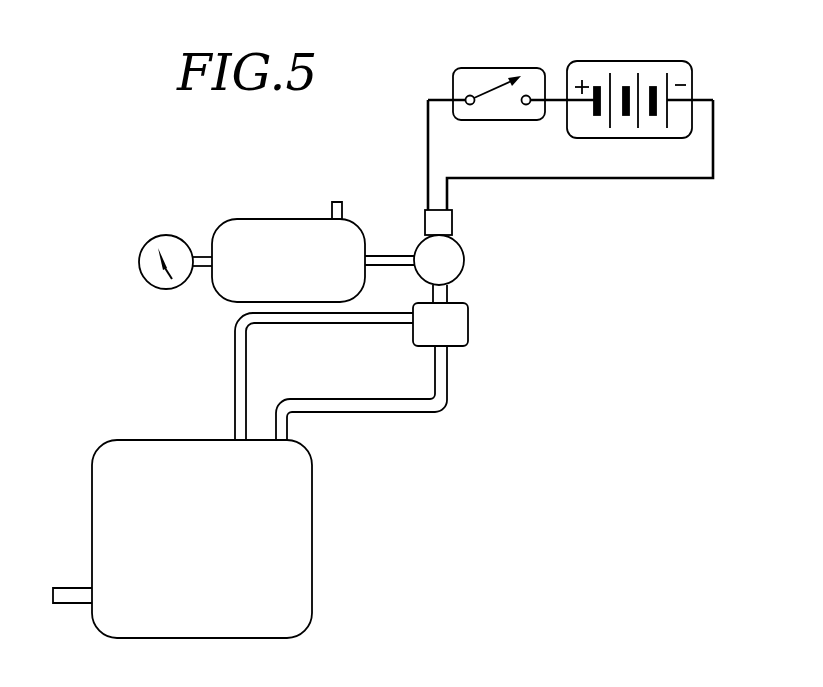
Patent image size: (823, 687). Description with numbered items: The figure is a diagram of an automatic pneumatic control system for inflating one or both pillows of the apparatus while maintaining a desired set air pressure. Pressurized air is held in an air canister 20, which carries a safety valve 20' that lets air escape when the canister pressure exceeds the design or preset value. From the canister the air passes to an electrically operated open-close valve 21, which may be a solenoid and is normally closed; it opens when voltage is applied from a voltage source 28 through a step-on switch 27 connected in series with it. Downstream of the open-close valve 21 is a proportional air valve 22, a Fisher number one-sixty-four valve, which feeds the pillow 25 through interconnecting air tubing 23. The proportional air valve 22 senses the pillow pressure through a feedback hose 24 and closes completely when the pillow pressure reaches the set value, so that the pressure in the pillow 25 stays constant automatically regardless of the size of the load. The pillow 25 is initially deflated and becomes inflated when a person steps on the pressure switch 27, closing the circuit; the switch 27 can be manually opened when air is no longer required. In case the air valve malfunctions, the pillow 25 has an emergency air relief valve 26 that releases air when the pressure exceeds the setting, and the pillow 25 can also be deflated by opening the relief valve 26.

The air canister 20 is at (288, 235).
The safety valve 20' is at (346, 177).
The electrically operated open-close valve 21 is at (465, 261).
The proportional air valve 22 is at (470, 325).
The air tubing 23 is at (401, 412).
The feedback hose 24 is at (349, 323).
The pillow 25 is at (148, 438).
The emergency air relief valve 26 is at (75, 587).
The step-on switch 27 is at (499, 68).
The voltage source 28 is at (630, 61).